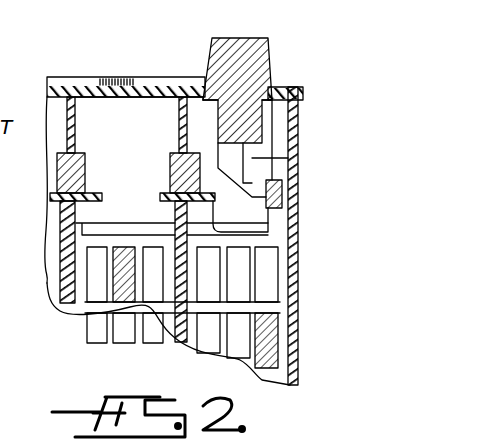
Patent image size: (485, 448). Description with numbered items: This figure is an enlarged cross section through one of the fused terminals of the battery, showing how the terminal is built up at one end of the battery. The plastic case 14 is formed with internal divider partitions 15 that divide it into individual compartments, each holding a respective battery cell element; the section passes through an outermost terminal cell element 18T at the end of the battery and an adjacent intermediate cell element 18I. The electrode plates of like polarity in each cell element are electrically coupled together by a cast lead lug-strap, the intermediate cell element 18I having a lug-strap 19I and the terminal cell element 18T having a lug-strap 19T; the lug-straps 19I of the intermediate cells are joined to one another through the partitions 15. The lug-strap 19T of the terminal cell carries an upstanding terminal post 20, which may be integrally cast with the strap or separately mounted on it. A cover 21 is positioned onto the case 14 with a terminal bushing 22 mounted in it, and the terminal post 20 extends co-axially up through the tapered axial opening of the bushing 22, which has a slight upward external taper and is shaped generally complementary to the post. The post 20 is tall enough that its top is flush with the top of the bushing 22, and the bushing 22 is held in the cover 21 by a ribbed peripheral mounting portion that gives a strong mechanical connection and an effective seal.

The case 14 is at (298, 248).
The internal divider partitions 15 is at (63, 258).
The intermediate cell element 18I is at (130, 302).
The terminal cell element 18T is at (268, 342).
The lug-strap 19I is at (158, 195).
The lug-strap 19T is at (282, 197).
The terminal post 20 is at (240, 100).
The cover 21 is at (127, 77).
The terminal bushing 22 is at (267, 38).